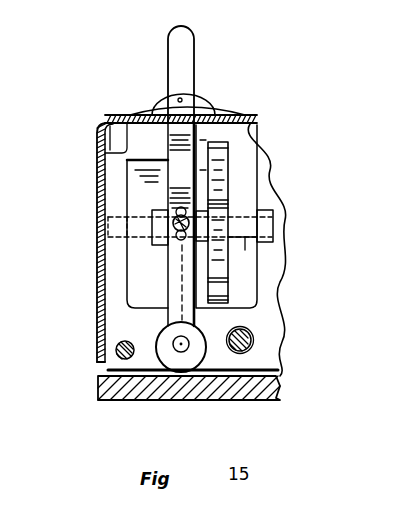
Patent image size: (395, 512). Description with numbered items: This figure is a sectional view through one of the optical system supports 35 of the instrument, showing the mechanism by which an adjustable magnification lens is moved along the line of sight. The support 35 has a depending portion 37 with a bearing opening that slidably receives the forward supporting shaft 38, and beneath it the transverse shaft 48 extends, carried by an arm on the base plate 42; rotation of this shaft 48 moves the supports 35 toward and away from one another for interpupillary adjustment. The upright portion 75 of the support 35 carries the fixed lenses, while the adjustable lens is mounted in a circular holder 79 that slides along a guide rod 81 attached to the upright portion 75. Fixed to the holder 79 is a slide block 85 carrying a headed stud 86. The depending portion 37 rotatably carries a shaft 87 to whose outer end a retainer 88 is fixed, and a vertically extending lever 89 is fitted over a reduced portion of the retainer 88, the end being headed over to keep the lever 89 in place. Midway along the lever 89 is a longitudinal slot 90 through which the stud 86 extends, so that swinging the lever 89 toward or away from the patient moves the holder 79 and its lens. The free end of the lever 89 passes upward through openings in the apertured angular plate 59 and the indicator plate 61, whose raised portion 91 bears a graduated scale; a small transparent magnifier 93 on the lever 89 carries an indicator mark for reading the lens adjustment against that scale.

The support 35 is at (118, 312).
The depending portion 37 is at (127, 323).
The forward supporting shaft 38 is at (121, 356).
The base plate 42 is at (282, 392).
The shaft 48 is at (250, 342).
The apertured angular plate 59 is at (97, 146).
The indicator plate 61 is at (113, 113).
The upright portion 75 is at (137, 188).
The circular holder 79 is at (222, 177).
The guide rod 81 is at (248, 254).
The slide block 85 is at (152, 210).
The headed stud 86 is at (171, 238).
The shaft 87 is at (182, 348).
The retainer 88 is at (195, 342).
The lever 89 is at (187, 52).
The longitudinal slot 90 is at (175, 236).
The raised portion 91 is at (227, 110).
The transparent magnifier 93 is at (202, 103).